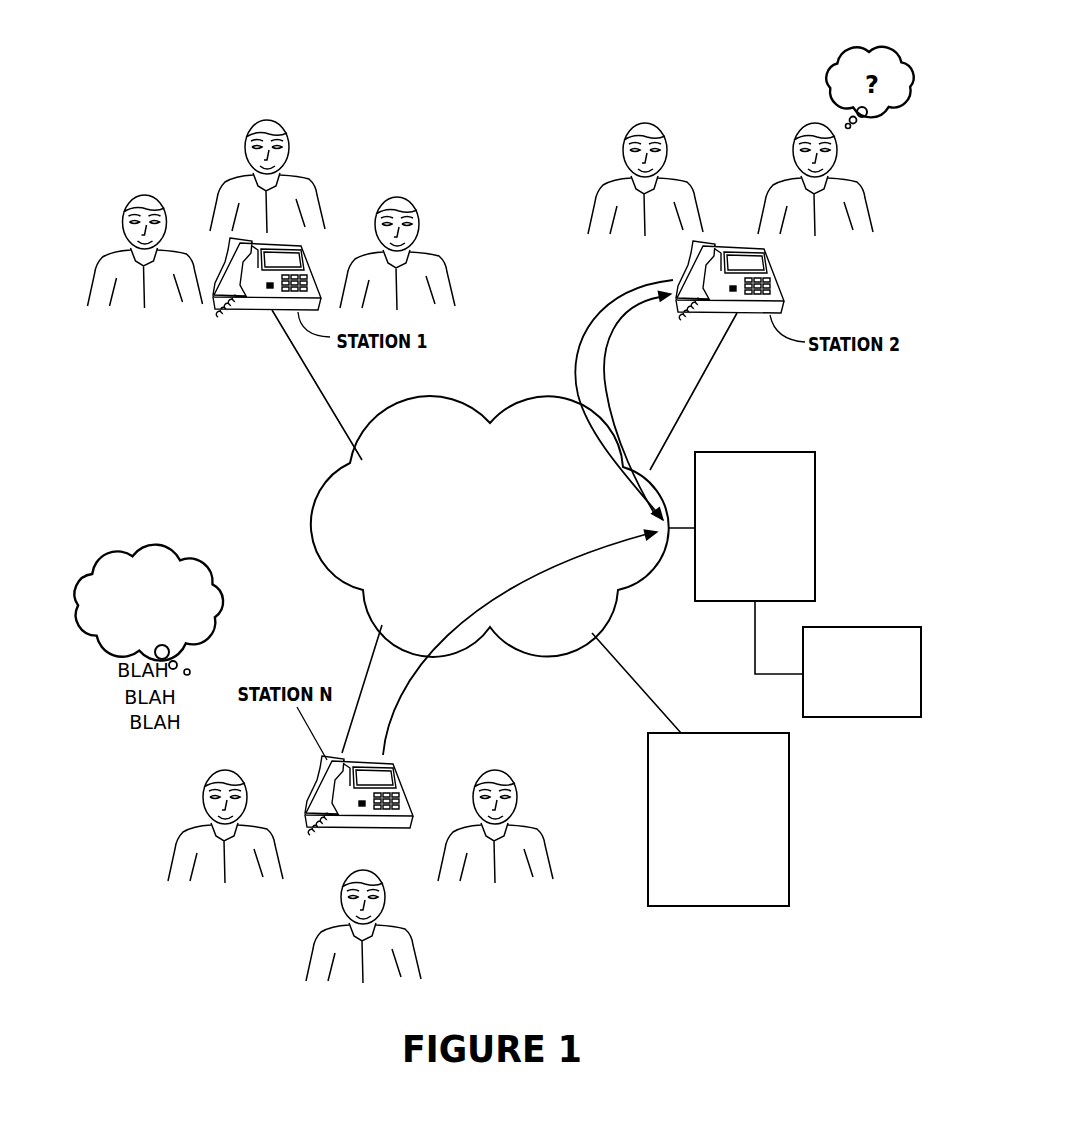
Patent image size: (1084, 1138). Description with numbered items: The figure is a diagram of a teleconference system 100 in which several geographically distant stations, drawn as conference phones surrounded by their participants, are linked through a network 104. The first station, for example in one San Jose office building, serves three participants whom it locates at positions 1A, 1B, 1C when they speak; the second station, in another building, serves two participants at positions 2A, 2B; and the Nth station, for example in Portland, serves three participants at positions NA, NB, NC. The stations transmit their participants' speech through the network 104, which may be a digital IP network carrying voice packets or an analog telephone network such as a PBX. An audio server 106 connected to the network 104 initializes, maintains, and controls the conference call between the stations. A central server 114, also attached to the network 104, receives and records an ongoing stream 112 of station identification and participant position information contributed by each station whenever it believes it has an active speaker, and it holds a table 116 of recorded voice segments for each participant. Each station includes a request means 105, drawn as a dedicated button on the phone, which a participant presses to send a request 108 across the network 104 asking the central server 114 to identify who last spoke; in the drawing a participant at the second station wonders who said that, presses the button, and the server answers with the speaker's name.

The teleconference system 100 is at (464, 60).
The network 104 is at (440, 396).
The request means 105 is at (267, 290).
The audio server 106 is at (732, 906).
The request 108 is at (595, 450).
The ongoing stream 112 is at (523, 585).
The central server 114 is at (817, 530).
The table 116 is at (866, 627).
The position 1A is at (145, 237).
The position 1B is at (267, 158).
The position 1C is at (397, 238).
The position 2A is at (645, 165).
The position 2B is at (815, 165).
The position NA is at (225, 811).
The position NB is at (363, 911).
The position NC is at (495, 811).